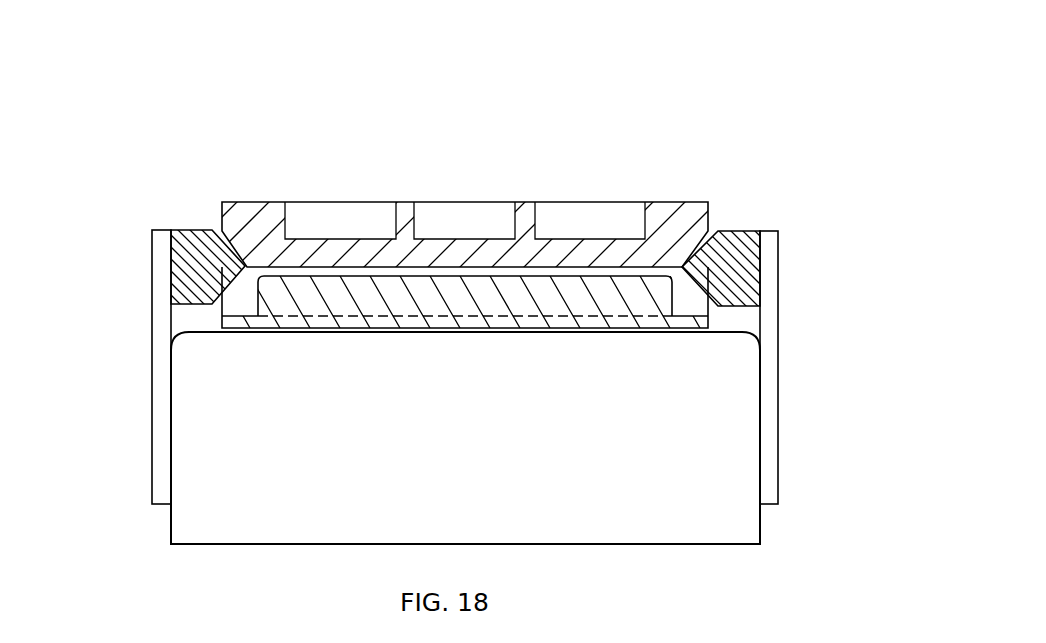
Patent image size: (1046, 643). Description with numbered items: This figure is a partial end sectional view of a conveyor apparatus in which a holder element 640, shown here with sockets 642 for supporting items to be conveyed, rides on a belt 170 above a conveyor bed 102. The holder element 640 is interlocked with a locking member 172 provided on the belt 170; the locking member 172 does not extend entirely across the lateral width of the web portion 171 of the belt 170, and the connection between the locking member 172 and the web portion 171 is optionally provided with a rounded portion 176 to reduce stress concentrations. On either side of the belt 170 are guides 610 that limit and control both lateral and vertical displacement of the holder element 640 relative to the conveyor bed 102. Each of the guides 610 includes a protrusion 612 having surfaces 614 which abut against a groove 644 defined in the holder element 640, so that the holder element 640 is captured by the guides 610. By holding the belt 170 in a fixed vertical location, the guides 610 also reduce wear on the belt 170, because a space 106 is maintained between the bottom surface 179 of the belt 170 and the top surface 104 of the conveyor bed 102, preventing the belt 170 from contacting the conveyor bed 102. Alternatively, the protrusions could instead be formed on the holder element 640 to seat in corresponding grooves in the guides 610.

The conveyor bed 102 is at (735, 445).
The top surface of conveyor bed 104 is at (442, 332).
The space 106 is at (383, 333).
The belt 170 is at (663, 349).
The web portion of the belt 171 is at (313, 332).
The locking member 172 is at (575, 305).
The rounded portion 176 is at (256, 316).
The bottom surface of the belt 179 is at (240, 331).
The guides 610 is at (157, 217).
The protrusion 612 is at (200, 257).
The surfaces 614 is at (240, 256).
The holder element 640 is at (662, 192).
The sockets 642 is at (565, 212).
The groove 644 is at (238, 240).